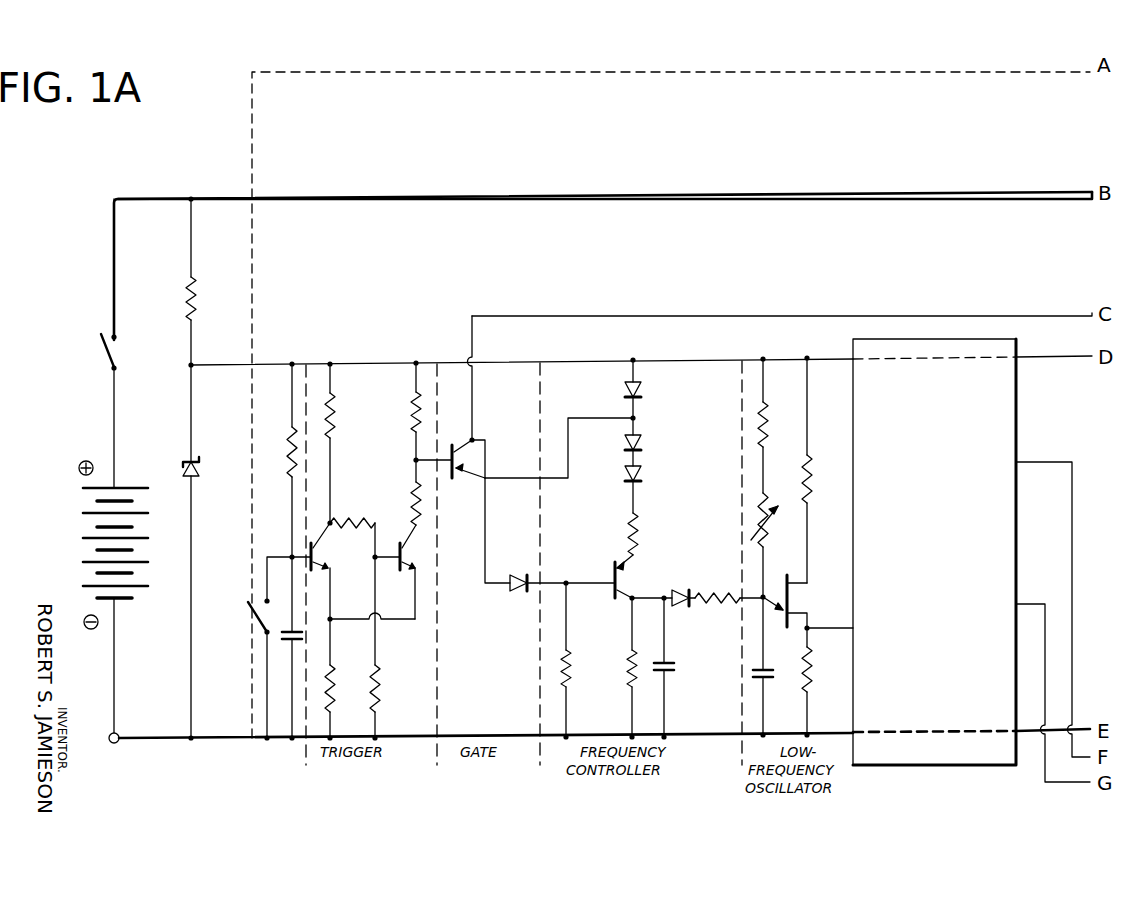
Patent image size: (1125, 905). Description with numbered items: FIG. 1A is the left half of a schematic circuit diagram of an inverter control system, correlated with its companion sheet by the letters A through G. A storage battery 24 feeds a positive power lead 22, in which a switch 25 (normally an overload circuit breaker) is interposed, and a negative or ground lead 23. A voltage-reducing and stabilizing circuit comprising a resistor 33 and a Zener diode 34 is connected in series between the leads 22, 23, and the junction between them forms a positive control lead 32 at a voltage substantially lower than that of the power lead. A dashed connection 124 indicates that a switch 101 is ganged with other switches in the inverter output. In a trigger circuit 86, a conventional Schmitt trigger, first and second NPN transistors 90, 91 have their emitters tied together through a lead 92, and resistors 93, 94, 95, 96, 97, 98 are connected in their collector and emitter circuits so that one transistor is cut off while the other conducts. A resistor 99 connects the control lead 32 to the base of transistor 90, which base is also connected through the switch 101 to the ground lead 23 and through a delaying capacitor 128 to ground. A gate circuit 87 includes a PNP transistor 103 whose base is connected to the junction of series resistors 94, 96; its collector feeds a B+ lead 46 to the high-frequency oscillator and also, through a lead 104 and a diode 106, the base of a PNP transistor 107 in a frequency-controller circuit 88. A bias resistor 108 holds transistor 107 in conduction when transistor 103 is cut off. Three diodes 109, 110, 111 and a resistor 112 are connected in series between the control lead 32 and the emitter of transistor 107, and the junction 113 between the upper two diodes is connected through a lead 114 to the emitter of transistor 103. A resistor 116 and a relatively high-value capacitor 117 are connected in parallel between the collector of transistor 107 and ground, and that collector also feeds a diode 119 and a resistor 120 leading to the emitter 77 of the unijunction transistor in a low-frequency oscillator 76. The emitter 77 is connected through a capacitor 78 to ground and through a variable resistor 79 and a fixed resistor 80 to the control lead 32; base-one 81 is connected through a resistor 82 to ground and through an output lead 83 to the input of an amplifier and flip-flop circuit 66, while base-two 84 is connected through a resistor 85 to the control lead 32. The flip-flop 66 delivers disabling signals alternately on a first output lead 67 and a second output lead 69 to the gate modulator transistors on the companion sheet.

The positive power lead 22 is at (965, 195).
The negative or ground lead 23 is at (240, 742).
The storage battery 24 is at (86, 525).
The switch 25 is at (116, 348).
The positive control lead 32 is at (370, 364).
The resistor 33 is at (193, 283).
The Zener diode 34 is at (199, 467).
The B+ lead 46 is at (875, 313).
The amplifier and flip-flop circuit 66 is at (1016, 419).
The output lead 67 is at (1084, 516).
The second output lead 69 is at (1050, 784).
The low-frequency oscillator 76 is at (840, 404).
The emitter 77 is at (778, 592).
The capacitor 78 is at (773, 678).
The variable resistor 79 is at (766, 527).
The fixed resistor 80 is at (766, 420).
The base-one 81 is at (795, 612).
The resistor 82 is at (810, 690).
The output lead 83 is at (827, 630).
The base-two 84 is at (800, 585).
The resistor 85 is at (810, 468).
The trigger circuit 86 is at (385, 396).
The gate circuit 87 is at (512, 396).
The frequency-controller circuit 88 is at (722, 412).
The first NPN transistor 90 is at (325, 561).
The second NPN transistor 91 is at (415, 547).
The lead 92 is at (409, 631).
The resistor 93 is at (333, 437).
The resistor 94 is at (414, 425).
The resistor 95 is at (361, 520).
The resistor 96 is at (414, 497).
The resistor 97 is at (338, 665).
The resistor 98 is at (378, 676).
The resistor 99 is at (290, 434).
The switch 101 is at (250, 614).
The PNP transistor 103 is at (461, 438).
The lead 104 is at (487, 518).
The diode 106 is at (518, 590).
The PNP transistor 107 is at (626, 582).
The bias resistor 108 is at (570, 658).
The diode 109 is at (641, 386).
The diode 110 is at (641, 440).
The diode 111 is at (641, 475).
The resistor 112 is at (636, 520).
The junction 113 is at (636, 418).
The lead 114 is at (568, 455).
The resistor 116 is at (628, 672).
The capacitor 117 is at (668, 672).
The diode 119 is at (685, 592).
The resistor 120 is at (726, 604).
The connection 124 is at (899, 70).
The capacitor 128 is at (284, 643).